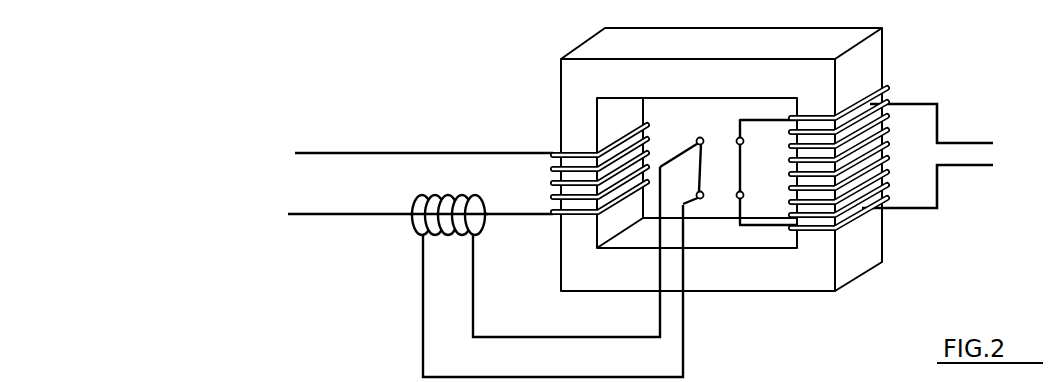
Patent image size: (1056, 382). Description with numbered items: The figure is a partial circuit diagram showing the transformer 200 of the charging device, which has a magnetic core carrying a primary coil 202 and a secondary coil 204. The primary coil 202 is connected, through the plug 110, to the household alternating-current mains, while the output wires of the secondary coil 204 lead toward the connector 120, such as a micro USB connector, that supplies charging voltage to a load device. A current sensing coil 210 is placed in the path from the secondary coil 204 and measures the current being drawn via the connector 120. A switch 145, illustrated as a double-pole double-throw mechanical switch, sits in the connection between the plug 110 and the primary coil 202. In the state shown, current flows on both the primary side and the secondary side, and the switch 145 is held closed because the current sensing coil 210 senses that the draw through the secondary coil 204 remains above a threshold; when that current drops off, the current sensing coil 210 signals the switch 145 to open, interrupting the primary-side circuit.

The transformer 200 is at (537, 70).
The primary coil 202 is at (890, 91).
The secondary coil 204 is at (552, 148).
The current sensing coil 210 is at (485, 223).
The switch 145 is at (720, 193).
The connector 120 is at (148, 190).
The plug 110 is at (1003, 121).